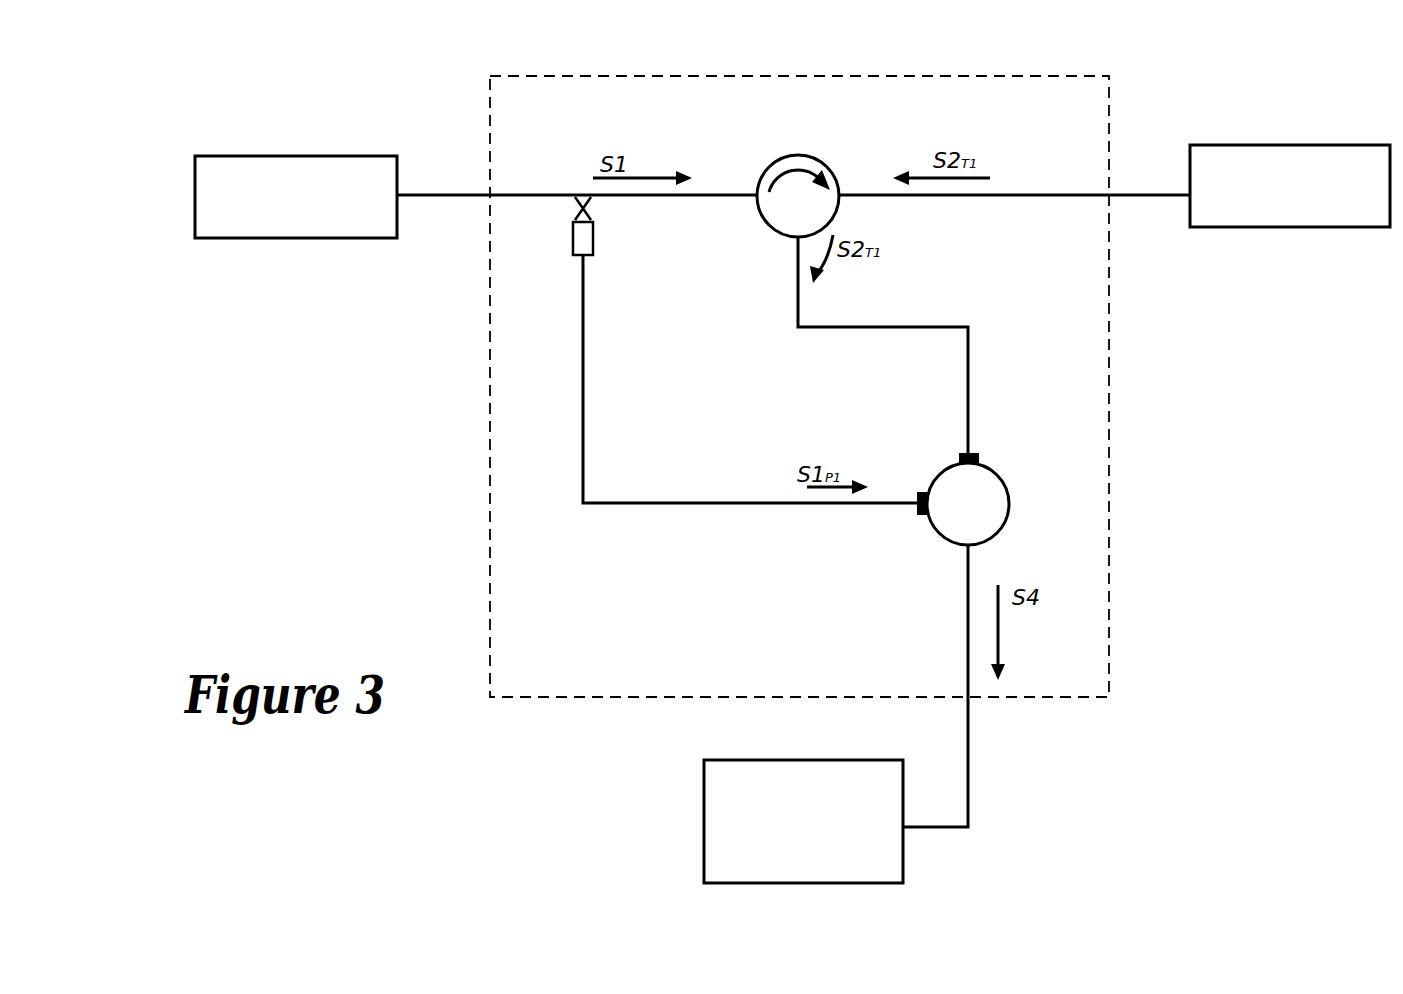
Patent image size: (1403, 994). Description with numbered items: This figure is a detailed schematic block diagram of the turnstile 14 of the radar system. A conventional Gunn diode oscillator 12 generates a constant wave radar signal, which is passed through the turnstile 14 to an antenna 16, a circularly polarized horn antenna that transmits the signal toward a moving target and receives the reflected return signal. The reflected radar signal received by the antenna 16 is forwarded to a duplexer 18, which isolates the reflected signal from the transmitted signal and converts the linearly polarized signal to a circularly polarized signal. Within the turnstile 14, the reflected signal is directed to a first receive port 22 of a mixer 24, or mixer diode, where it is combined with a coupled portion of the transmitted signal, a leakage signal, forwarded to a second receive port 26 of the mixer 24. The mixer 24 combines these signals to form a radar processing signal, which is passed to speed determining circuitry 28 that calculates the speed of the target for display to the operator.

The Gunn diode oscillator 12 is at (330, 156).
The turnstile 14 is at (797, 73).
The antenna 16 is at (1228, 145).
The duplexer 18 is at (793, 155).
The first receive port 22 is at (967, 453).
The mixer 24 is at (1003, 527).
The second receive port 26 is at (923, 517).
The speed determining circuitry 28 is at (703, 858).